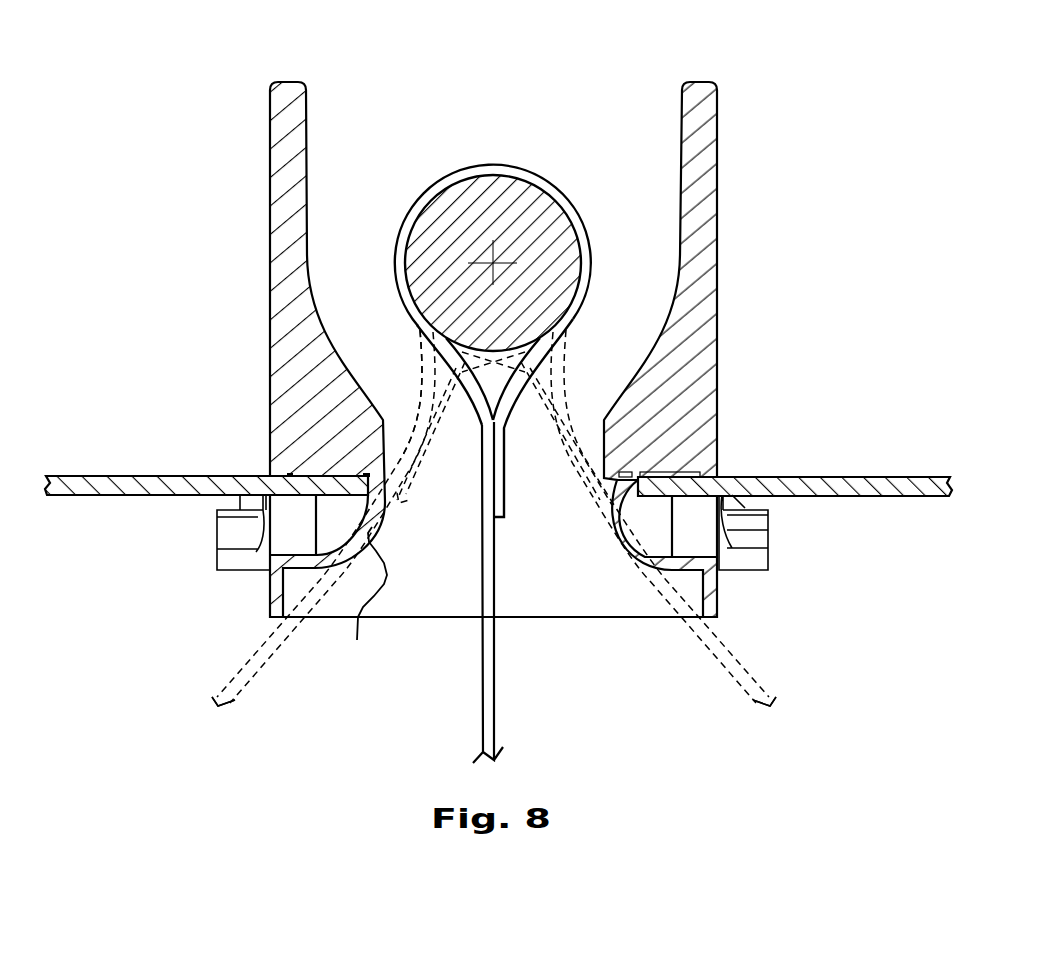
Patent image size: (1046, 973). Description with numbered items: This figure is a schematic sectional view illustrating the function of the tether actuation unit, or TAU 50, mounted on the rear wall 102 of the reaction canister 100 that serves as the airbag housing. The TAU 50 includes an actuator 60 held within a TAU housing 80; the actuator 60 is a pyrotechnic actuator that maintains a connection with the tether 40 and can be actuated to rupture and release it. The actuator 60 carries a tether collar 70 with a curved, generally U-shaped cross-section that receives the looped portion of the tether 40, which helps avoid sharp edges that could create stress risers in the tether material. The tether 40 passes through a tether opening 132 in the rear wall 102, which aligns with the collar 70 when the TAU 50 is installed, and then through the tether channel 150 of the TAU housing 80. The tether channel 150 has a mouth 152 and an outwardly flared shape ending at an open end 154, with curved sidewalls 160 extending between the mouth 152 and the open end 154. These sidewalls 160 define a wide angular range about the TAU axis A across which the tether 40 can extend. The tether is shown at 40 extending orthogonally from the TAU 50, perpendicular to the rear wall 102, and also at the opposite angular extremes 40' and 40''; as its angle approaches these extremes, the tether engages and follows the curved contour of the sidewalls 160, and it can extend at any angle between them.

The tether actuation unit (TAU) 50 is at (247, 95).
The TAU housing 80 is at (690, 224).
The actuator 60 is at (512, 225).
The tether collar 70 is at (460, 180).
The TAU axis A is at (490, 260).
The tether 40 is at (531, 592).
The tether at first angular extreme 40' is at (191, 669).
The tether at second angular extreme 40'' is at (800, 664).
The reaction canister 100 is at (775, 487).
The rear wall 102 is at (175, 480).
The tether opening 132 is at (248, 526).
The tether channel 150 is at (727, 572).
The mouth 152 is at (400, 430).
The open end 154 is at (410, 622).
The curved sidewalls 160 is at (466, 602).